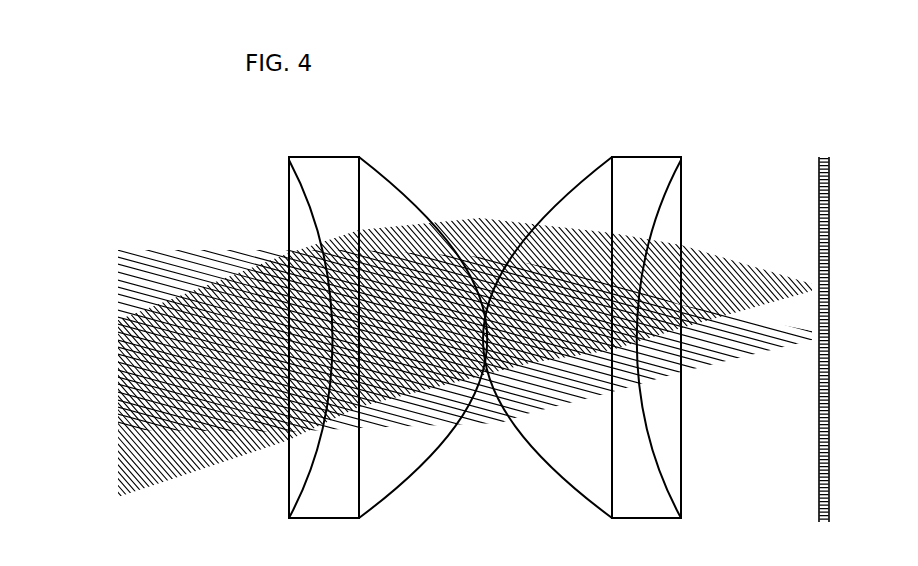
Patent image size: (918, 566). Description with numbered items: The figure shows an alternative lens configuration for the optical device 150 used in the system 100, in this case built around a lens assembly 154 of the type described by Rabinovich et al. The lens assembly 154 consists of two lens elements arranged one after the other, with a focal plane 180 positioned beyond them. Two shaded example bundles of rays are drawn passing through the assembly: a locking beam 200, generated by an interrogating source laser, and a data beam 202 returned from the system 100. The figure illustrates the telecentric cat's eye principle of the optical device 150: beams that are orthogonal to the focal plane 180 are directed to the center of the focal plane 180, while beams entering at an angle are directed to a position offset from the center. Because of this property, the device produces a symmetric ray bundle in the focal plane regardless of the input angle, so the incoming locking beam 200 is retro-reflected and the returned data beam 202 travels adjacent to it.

The system 100 is at (583, 64).
The optical device 150 is at (685, 126).
The lens assembly 154 is at (274, 187).
The focal plane 180 is at (815, 200).
The locking beam 200 is at (257, 452).
The data beam 202 is at (222, 466).